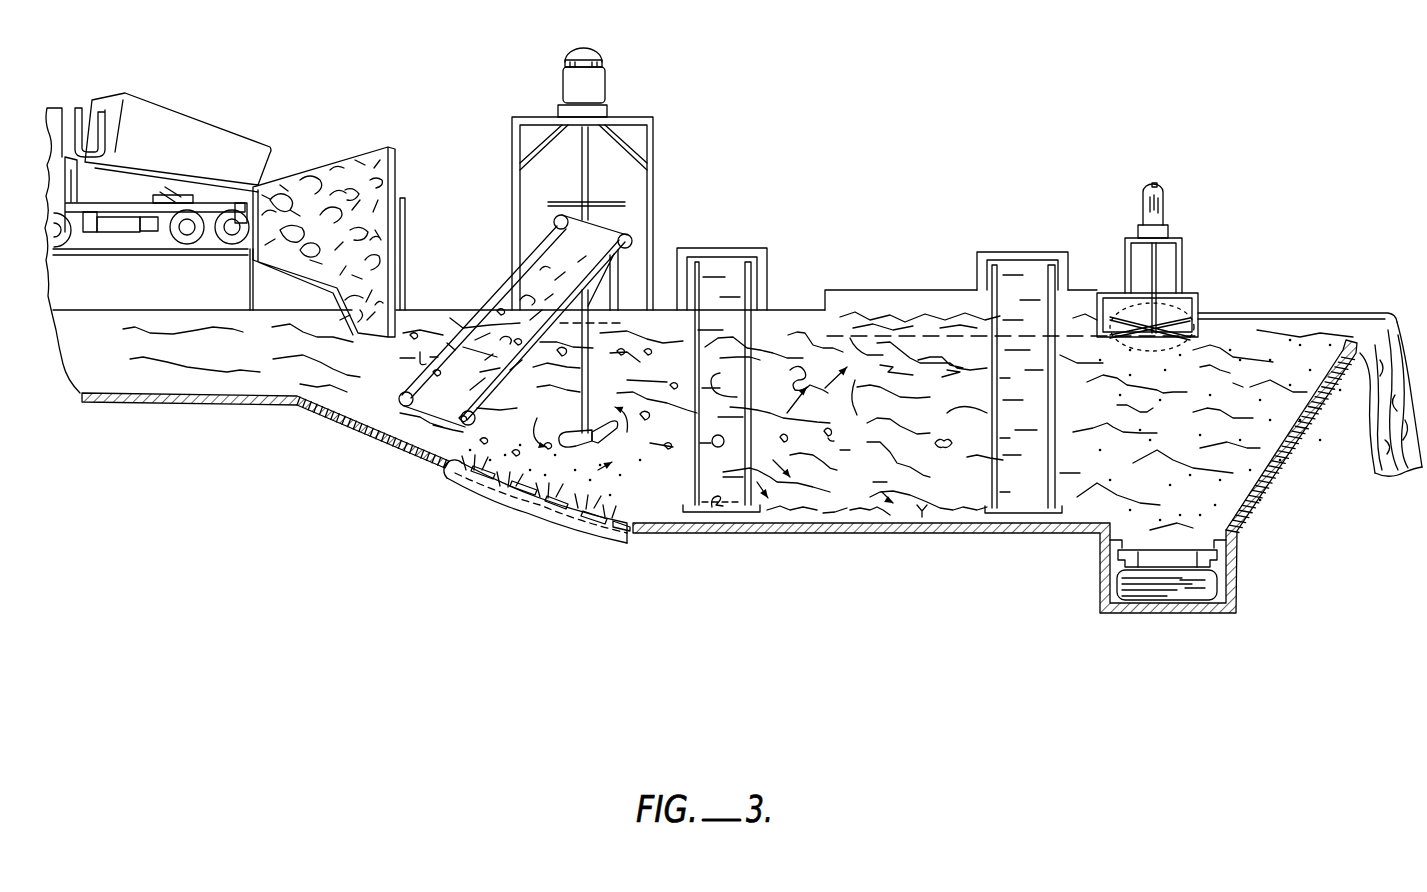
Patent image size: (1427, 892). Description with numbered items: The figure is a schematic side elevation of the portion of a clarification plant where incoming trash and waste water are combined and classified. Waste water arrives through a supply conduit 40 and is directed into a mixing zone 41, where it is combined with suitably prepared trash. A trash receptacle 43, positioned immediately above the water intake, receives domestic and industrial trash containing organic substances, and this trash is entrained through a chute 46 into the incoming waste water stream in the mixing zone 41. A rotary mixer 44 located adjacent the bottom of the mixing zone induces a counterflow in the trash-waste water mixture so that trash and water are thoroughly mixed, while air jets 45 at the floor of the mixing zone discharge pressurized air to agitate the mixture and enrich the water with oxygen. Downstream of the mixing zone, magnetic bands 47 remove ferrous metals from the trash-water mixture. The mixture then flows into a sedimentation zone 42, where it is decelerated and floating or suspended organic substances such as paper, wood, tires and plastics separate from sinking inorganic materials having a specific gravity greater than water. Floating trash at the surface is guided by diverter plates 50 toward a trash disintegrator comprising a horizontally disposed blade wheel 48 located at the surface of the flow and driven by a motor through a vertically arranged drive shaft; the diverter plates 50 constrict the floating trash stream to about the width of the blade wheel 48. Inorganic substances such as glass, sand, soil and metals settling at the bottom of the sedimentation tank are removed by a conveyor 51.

The supply conduit 40 is at (165, 377).
The mixing zone 41 is at (613, 422).
The sedimentation zone 42 is at (947, 473).
The trash receptacle 43 is at (350, 168).
The rotary mixer 44 is at (576, 447).
The air jets 45 is at (480, 498).
The chute 46 is at (377, 323).
The magnetic bands 47 is at (737, 267).
The blade wheel 48 is at (1180, 313).
The diverter plates 50 is at (883, 300).
The conveyor 51 is at (1232, 588).